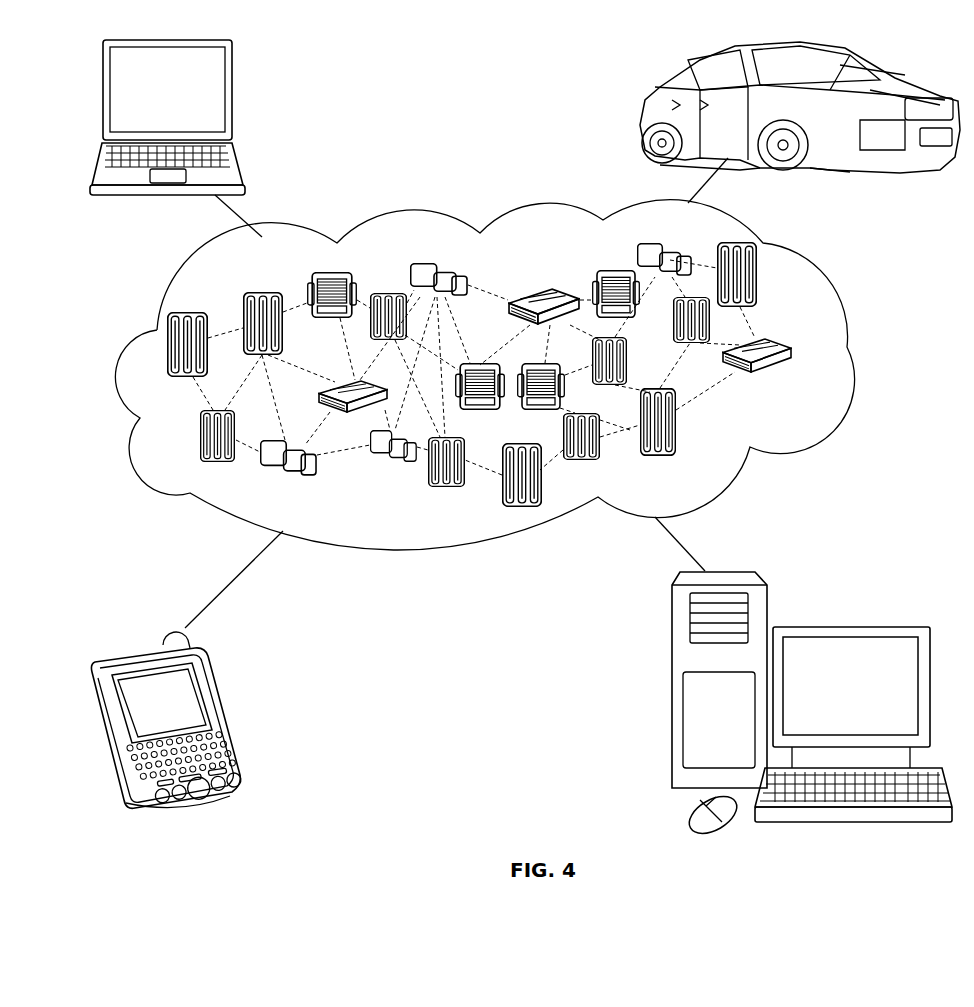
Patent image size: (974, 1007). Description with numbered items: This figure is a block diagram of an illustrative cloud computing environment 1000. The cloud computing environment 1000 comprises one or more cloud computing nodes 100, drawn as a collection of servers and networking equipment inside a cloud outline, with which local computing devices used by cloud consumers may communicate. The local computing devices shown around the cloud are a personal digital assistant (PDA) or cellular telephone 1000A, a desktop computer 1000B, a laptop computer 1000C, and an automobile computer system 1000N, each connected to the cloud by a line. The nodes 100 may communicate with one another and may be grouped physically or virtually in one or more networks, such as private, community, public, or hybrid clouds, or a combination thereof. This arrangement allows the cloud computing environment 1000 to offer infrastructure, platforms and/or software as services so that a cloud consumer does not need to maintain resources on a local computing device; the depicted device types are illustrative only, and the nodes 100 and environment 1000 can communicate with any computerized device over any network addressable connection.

The cloud computing nodes 100 is at (800, 388).
The cloud computing environment 1000 is at (848, 357).
The personal digital assistant (PDA) or cellular telephone 1000A is at (223, 716).
The desktop computer 1000B is at (848, 627).
The laptop computer 1000C is at (232, 98).
The automobile computer system 1000N is at (647, 112).